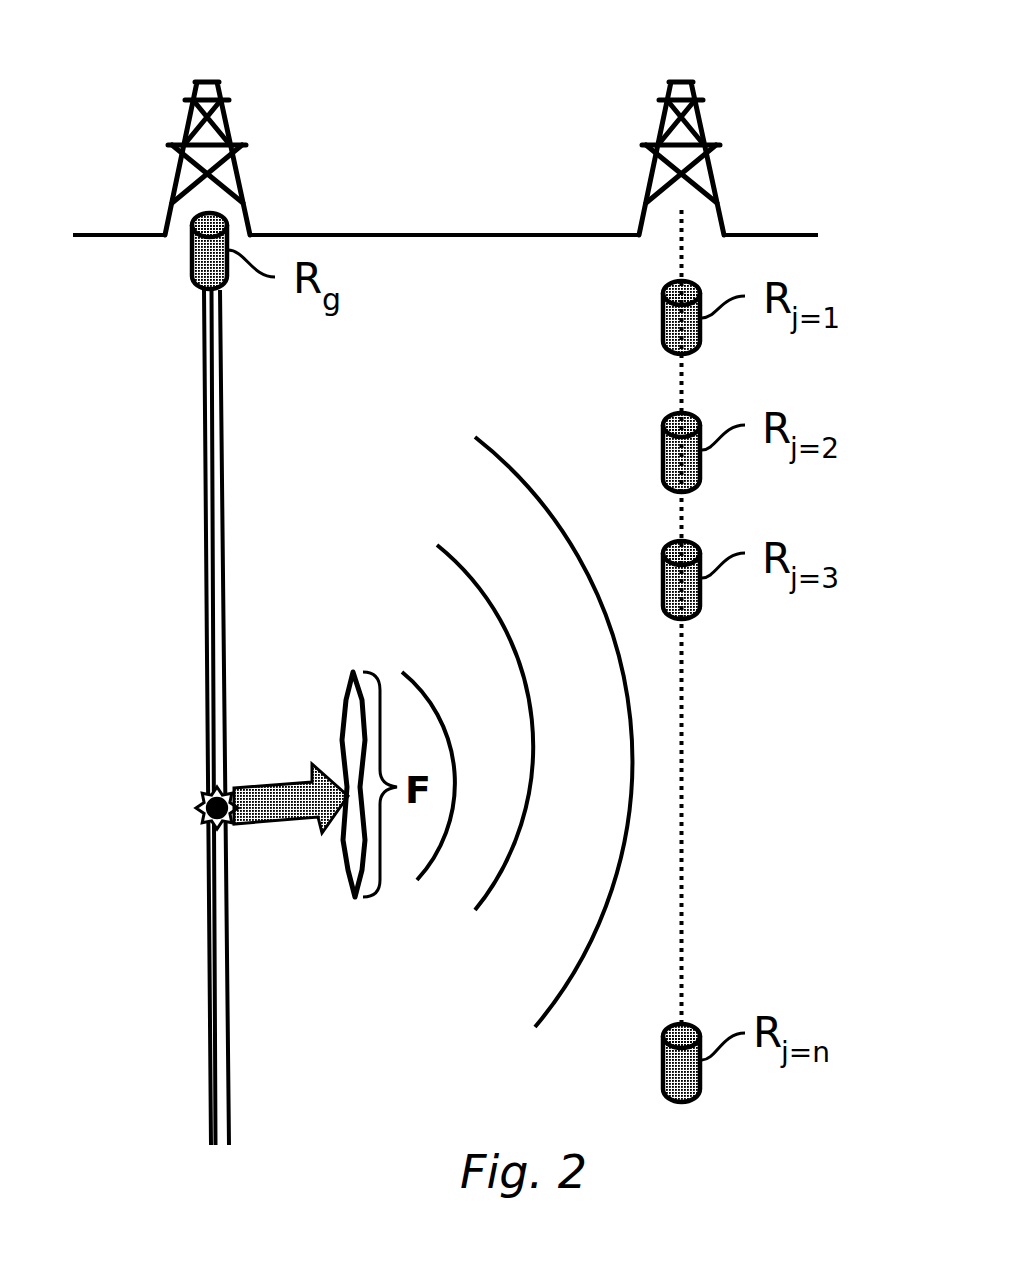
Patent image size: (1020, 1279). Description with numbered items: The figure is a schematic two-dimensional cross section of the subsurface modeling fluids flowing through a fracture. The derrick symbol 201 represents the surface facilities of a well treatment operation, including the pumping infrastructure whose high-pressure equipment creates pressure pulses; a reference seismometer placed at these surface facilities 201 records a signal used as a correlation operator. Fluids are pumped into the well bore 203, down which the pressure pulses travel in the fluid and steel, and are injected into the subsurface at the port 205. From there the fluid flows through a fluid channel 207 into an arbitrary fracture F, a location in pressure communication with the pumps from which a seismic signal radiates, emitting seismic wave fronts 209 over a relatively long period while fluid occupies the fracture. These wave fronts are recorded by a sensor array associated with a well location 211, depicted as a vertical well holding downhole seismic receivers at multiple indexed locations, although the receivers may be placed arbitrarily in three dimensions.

The derrick symbol 201 is at (207, 77).
The well bore 203 is at (197, 463).
The port 205 is at (190, 808).
The fluid channel 207 is at (291, 798).
The seismic wave fronts 209 is at (520, 1067).
The well location 211 is at (675, 77).